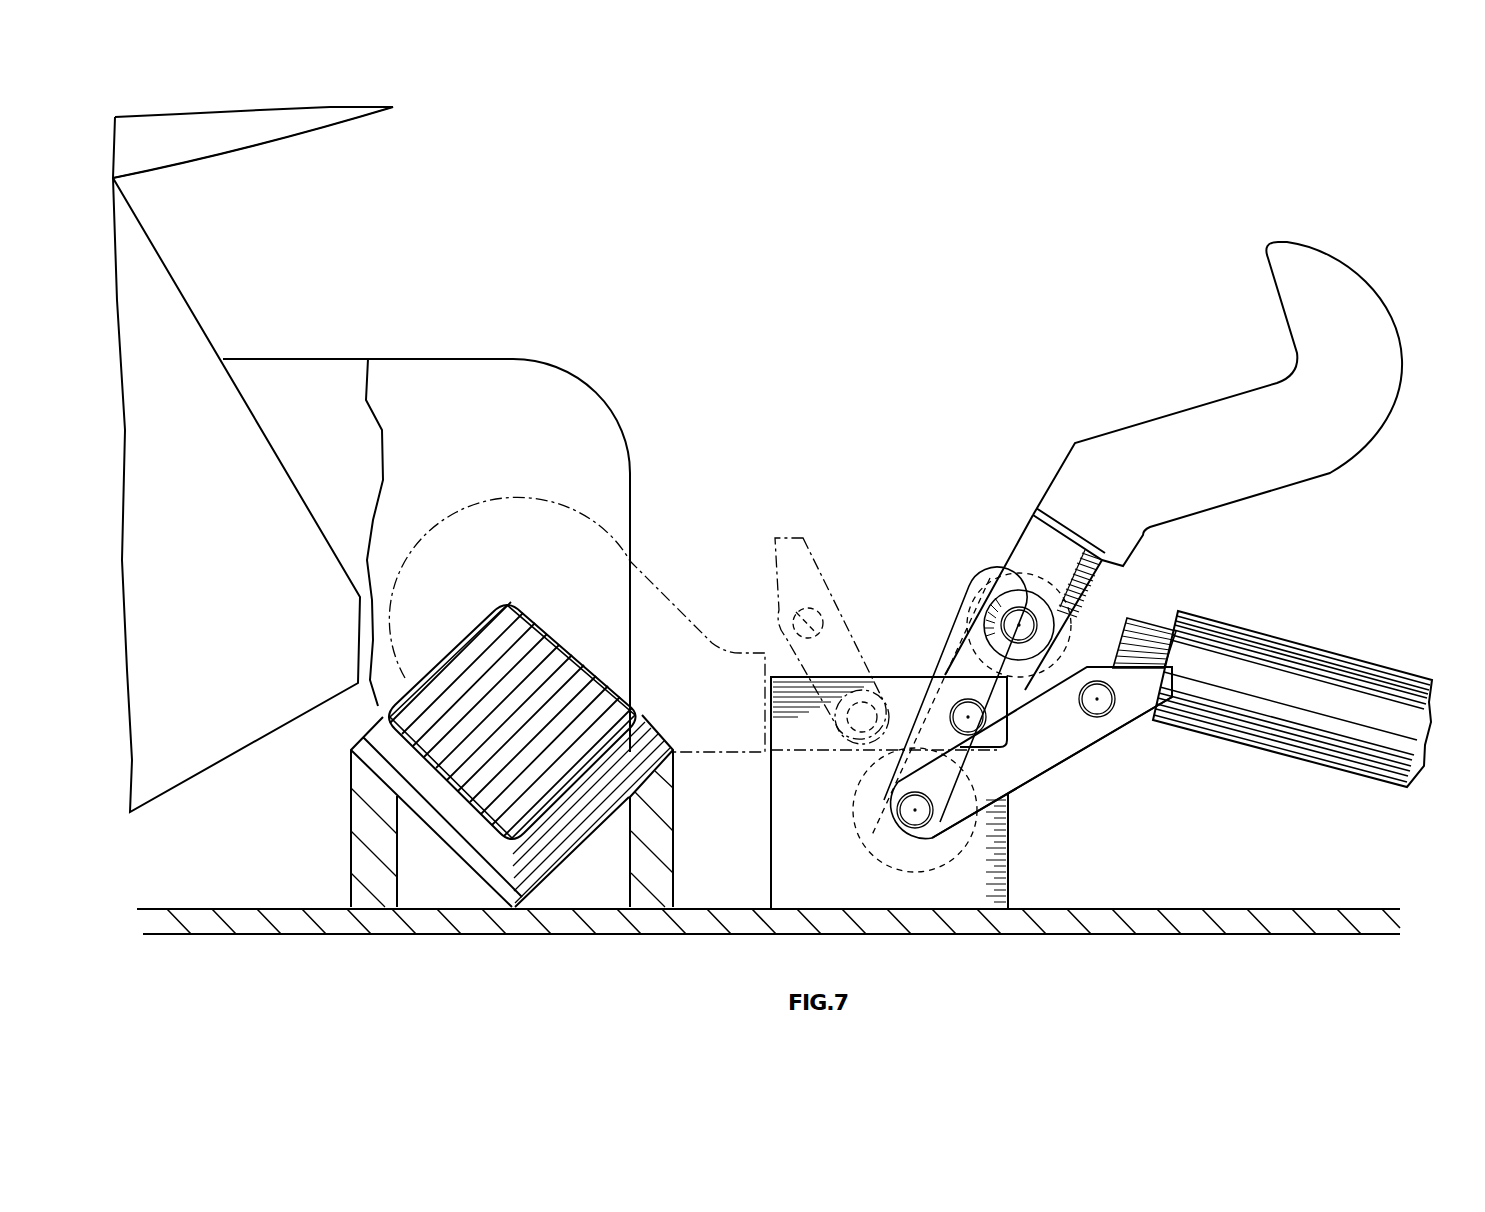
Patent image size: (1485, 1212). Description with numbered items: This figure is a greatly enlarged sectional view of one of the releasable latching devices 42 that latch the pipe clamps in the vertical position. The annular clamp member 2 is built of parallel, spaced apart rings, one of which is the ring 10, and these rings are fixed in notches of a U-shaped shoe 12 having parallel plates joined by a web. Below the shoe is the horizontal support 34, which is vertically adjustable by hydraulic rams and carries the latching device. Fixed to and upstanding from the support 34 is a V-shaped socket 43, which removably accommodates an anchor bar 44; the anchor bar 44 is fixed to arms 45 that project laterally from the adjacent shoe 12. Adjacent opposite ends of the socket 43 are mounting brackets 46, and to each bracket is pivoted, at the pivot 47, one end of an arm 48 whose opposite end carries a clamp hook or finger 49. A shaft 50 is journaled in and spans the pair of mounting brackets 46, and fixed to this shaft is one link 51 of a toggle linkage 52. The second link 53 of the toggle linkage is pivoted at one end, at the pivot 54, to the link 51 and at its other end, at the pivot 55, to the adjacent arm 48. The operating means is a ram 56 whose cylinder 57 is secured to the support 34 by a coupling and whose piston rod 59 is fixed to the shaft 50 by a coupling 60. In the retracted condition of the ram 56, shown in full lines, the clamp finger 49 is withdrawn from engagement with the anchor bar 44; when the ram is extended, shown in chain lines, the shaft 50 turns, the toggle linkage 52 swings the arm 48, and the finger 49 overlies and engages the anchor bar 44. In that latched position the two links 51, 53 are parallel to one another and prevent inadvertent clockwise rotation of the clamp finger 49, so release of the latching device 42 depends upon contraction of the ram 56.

The annular clamp member 2 is at (334, 136).
The ring 10 is at (272, 137).
The U-shaped shoe 12 is at (270, 420).
The horizontal support 34 is at (1126, 908).
The releasable latching device 42 is at (886, 454).
The V-shaped socket 43 is at (605, 808).
The anchor bar 44 is at (415, 740).
The arm 45 is at (610, 447).
The mounting bracket 46 is at (993, 862).
The pivot 47 is at (960, 708).
The arm 48 is at (1040, 552).
The clamp hook or finger 49 is at (640, 577).
The shaft 50 is at (1008, 840).
The link 51 is at (820, 578).
The toggle linkage 52 is at (1142, 740).
The second link 53 is at (832, 632).
The pivot 54 is at (1100, 695).
The pivot 55 is at (1017, 622).
The ram 56 is at (1364, 645).
The cylinder 57 is at (1262, 651).
The piston rod 59 is at (1147, 630).
The coupling 60 is at (968, 617).